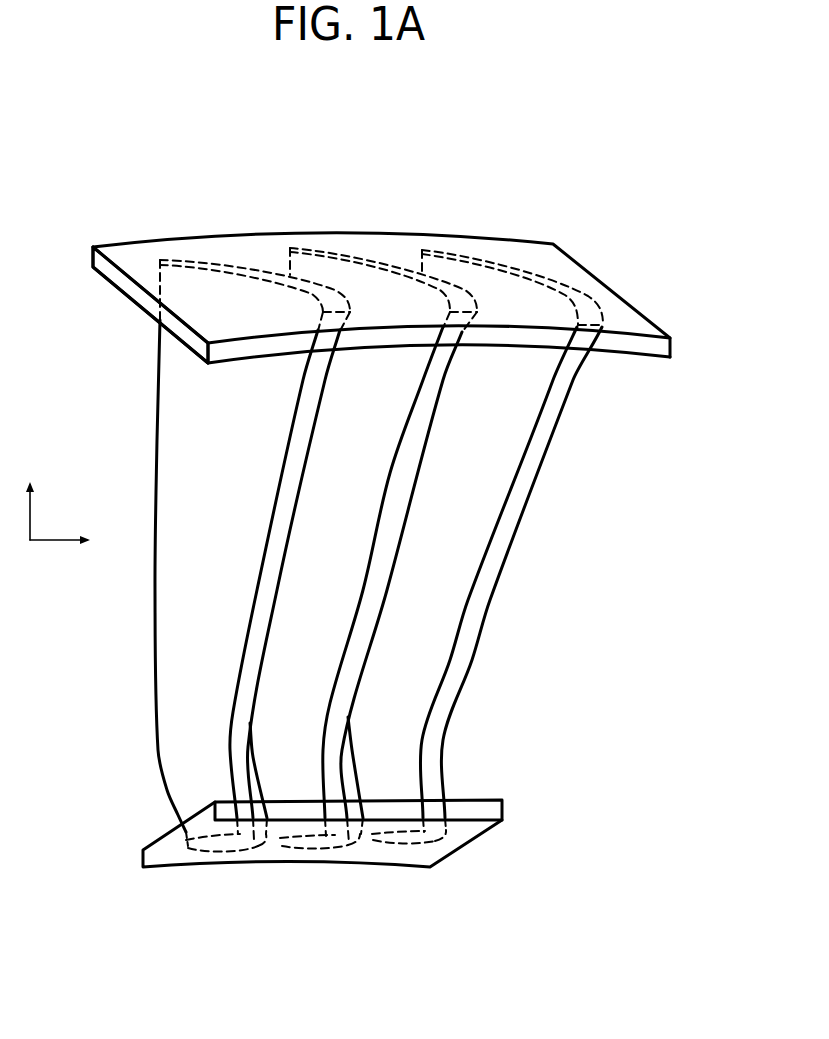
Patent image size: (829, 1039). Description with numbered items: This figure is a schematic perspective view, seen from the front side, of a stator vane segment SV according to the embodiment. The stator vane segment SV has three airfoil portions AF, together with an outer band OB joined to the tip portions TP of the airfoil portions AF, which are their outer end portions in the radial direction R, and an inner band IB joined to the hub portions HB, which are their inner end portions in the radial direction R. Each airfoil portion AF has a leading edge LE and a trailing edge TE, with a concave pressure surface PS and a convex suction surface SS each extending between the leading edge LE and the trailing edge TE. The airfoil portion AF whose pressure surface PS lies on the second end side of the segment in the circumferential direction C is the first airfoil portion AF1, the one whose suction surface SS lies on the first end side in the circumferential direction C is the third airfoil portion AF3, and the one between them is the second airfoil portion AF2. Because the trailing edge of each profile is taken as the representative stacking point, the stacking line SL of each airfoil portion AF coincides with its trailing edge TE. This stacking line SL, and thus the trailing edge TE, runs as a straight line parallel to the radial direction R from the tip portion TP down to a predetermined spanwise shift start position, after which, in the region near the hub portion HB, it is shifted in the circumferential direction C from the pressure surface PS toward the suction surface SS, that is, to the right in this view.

The stator vane segment SV is at (205, 204).
The tip portion TP is at (142, 330).
The outer band OB is at (362, 334).
The airfoil portion AF is at (381, 550).
The first airfoil portion AF1 is at (255, 556).
The second airfoil portion AF2 is at (378, 548).
The third airfoil portion AF3 is at (487, 547).
The trailing edge TE is at (121, 583).
The stacking line SL is at (177, 747).
The leading edge LE is at (440, 692).
The pressure surface PS is at (121, 583).
The suction surface SS is at (483, 593).
The hub portion HB is at (296, 797).
The inner band IB is at (475, 798).
The radial direction R is at (31, 494).
The circumferential direction C is at (73, 540).